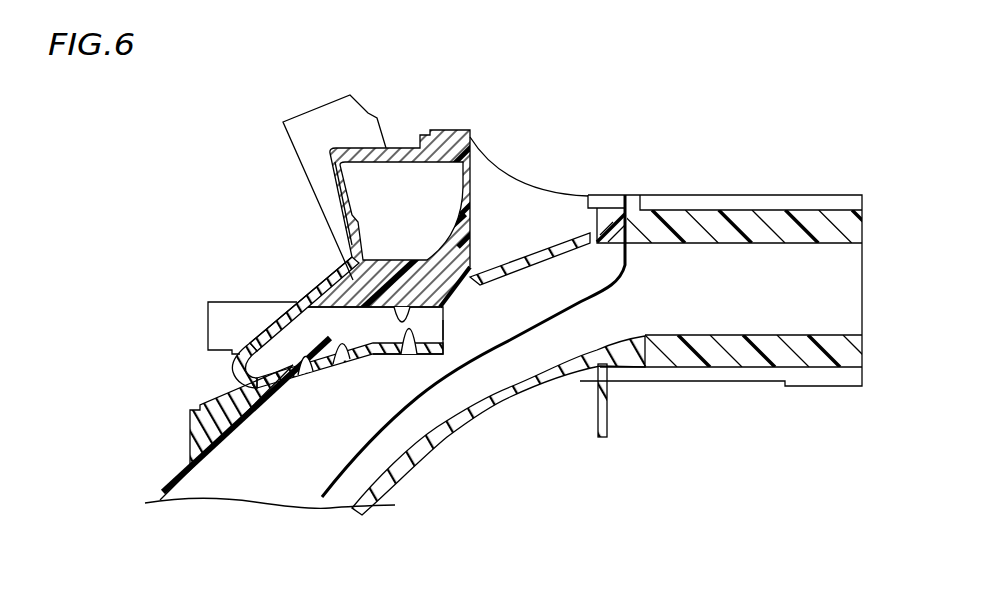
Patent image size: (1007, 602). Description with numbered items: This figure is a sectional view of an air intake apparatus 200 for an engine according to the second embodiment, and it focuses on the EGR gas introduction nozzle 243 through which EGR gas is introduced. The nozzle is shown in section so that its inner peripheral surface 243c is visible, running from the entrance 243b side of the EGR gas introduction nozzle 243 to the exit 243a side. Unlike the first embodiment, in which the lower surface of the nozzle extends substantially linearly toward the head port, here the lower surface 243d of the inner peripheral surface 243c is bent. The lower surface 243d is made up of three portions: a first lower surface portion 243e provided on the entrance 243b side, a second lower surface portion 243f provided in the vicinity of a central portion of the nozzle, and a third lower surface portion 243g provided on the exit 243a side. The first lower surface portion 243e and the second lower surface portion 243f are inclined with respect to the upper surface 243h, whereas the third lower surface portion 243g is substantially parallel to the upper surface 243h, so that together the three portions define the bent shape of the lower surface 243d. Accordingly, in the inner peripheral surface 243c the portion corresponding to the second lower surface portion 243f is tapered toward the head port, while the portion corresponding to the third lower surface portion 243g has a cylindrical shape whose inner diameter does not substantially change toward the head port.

The air intake apparatus 200 is at (232, 158).
The EGR gas introduction nozzle 243 is at (408, 390).
The exit 243a is at (447, 327).
The entrance 243b is at (373, 328).
The inner peripheral surface 243c is at (363, 328).
The lower surface 243d is at (312, 464).
The first lower surface portion 243e is at (292, 372).
The second lower surface portion 243f is at (331, 362).
The third lower surface portion 243g is at (401, 352).
The upper surface 243h is at (400, 318).